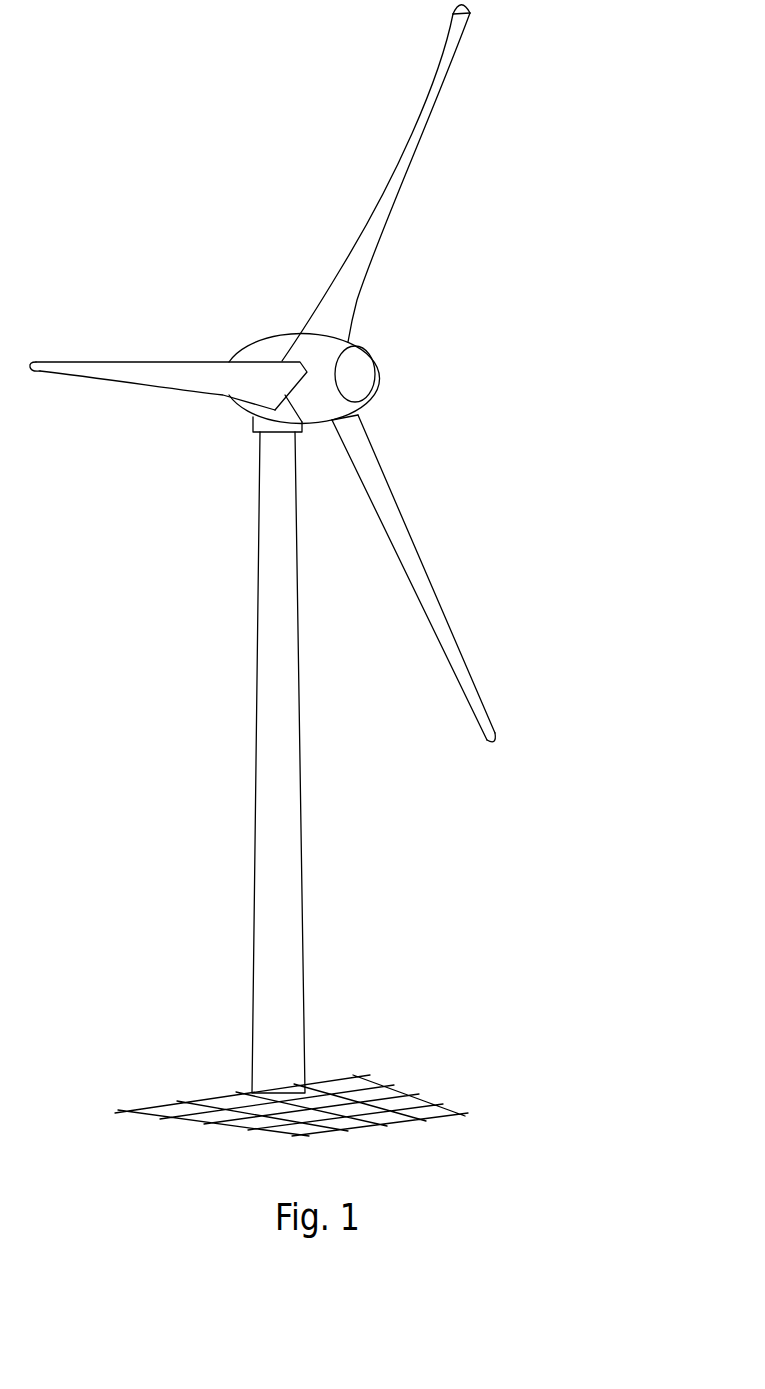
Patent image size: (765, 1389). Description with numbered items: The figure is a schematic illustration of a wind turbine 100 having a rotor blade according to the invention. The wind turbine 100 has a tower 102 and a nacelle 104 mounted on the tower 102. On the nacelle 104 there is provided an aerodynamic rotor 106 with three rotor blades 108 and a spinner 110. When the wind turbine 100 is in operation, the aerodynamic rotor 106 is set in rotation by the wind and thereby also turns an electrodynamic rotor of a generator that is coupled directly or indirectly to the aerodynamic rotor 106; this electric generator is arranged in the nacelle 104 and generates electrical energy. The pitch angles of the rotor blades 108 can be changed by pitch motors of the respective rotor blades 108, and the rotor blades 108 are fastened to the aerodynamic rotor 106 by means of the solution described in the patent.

The wind turbine 100 is at (215, 498).
The tower 102 is at (285, 865).
The nacelle 104 is at (272, 347).
The aerodynamic rotor 106 is at (440, 298).
The rotor blades 108 is at (417, 130).
The spinner 110 is at (358, 373).